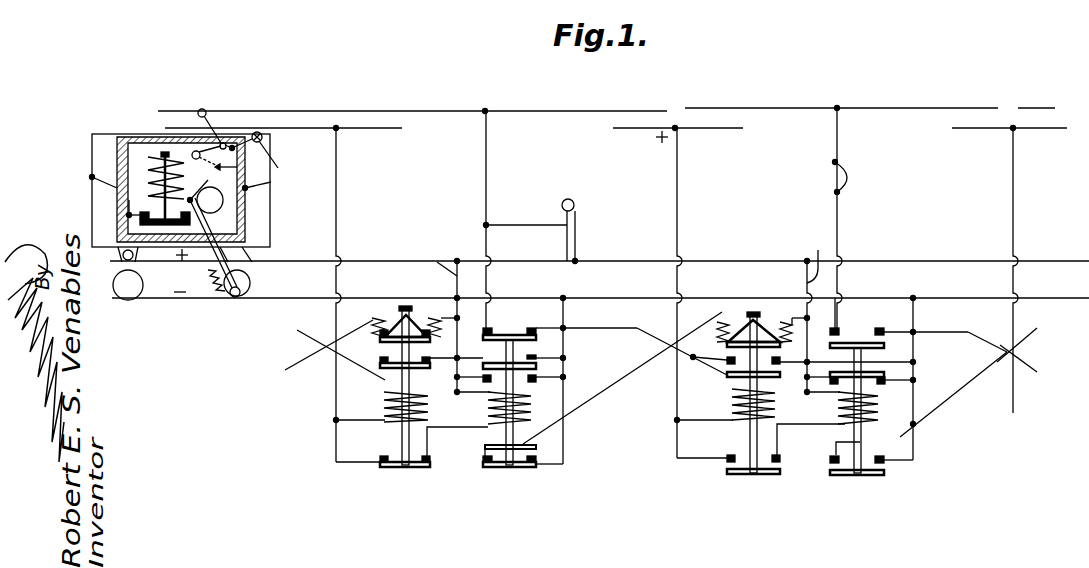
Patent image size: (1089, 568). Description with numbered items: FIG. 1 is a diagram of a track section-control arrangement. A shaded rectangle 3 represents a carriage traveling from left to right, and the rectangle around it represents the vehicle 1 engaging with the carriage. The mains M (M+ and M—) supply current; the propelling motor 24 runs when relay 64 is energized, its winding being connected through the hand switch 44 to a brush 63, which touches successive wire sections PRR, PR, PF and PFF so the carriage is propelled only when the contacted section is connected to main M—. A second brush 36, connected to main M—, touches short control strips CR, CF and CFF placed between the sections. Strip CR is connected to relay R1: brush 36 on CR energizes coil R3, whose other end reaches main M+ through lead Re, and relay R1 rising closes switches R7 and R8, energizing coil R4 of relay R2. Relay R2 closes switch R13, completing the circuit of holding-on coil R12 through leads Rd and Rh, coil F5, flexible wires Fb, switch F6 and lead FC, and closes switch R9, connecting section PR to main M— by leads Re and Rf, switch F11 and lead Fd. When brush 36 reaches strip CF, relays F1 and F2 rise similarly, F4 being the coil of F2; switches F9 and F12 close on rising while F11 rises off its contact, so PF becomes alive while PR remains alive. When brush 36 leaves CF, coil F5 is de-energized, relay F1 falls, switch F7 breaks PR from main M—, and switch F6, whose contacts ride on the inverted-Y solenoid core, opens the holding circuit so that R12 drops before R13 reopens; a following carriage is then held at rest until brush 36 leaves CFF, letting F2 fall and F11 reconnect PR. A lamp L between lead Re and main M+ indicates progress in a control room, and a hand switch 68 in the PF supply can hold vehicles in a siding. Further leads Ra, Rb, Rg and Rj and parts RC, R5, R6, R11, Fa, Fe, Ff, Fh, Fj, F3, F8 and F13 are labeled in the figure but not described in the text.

The vehicle 1 is at (92, 207).
The carriage 3 is at (135, 138).
The propelling motor 24 is at (213, 203).
The brush 36 is at (250, 151).
The hand switch 44 is at (196, 151).
The brush 63 is at (216, 120).
The relay 64 is at (157, 225).
The hand switch 68 is at (851, 178).
The mains M is at (178, 270).
The lamp L is at (578, 205).
The wire section PRR is at (322, 111).
The wire section PR is at (507, 111).
The wire section PF is at (740, 108).
The wire section PFF is at (1030, 108).
The control strip CR is at (360, 128).
The control strip CF is at (698, 128).
The control strip CFF is at (1033, 128).
The contact RC is at (440, 270).
The lead FC is at (803, 312).
The conductor Ra is at (336, 216).
The spring Rb is at (373, 318).
The lead Rd is at (573, 370).
The lead Re is at (503, 219).
The lead Rf is at (645, 343).
The conductor Rg is at (384, 381).
The lead Rh is at (622, 378).
The conductor Rj is at (356, 368).
The relay R1 is at (398, 435).
The relay R2 is at (483, 458).
The coil R3 is at (387, 405).
The coil R4 is at (492, 408).
The relay armature R5 is at (402, 306).
The relay contact bar R6 is at (426, 341).
The switch R7 is at (386, 361).
The switch R8 is at (423, 458).
The switch R9 is at (503, 335).
The relay contact R11 is at (519, 380).
The holding-on coil R12 is at (540, 444).
The switch R13 is at (540, 459).
The conductor Fa is at (677, 216).
The flexible wires Fb is at (719, 321).
The lead Fd is at (919, 370).
The conductor Fe is at (838, 216).
The conductor Ff is at (933, 389).
The conductor Fh is at (953, 394).
The conductor Fj is at (704, 347).
The relay F1 is at (752, 456).
The relay F2 is at (884, 460).
The relay coil F3 is at (730, 419).
The coil F4 is at (878, 418).
The holding coil F5 is at (750, 312).
The switch F6 is at (759, 341).
The switch F7 is at (765, 369).
The relay contact F8 is at (763, 478).
The switch F9 is at (722, 367).
The switch F11 is at (873, 384).
The switch and holding coil F12 is at (845, 426).
The relay contact F13 is at (868, 458).